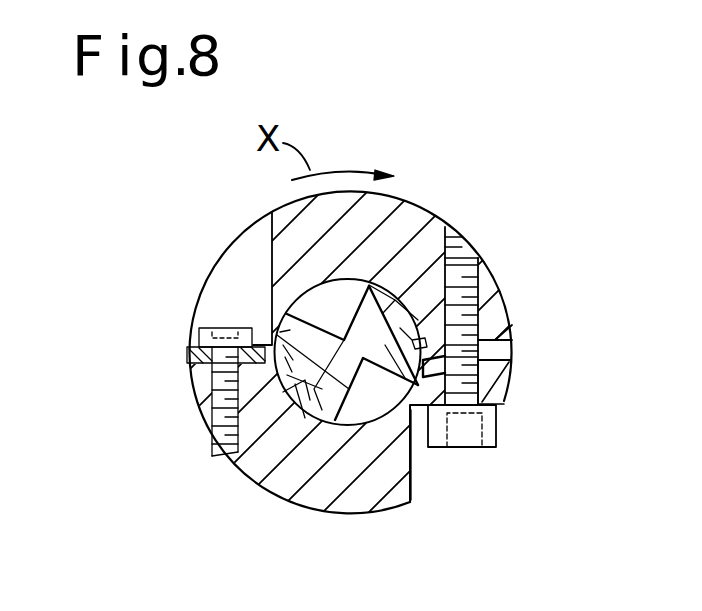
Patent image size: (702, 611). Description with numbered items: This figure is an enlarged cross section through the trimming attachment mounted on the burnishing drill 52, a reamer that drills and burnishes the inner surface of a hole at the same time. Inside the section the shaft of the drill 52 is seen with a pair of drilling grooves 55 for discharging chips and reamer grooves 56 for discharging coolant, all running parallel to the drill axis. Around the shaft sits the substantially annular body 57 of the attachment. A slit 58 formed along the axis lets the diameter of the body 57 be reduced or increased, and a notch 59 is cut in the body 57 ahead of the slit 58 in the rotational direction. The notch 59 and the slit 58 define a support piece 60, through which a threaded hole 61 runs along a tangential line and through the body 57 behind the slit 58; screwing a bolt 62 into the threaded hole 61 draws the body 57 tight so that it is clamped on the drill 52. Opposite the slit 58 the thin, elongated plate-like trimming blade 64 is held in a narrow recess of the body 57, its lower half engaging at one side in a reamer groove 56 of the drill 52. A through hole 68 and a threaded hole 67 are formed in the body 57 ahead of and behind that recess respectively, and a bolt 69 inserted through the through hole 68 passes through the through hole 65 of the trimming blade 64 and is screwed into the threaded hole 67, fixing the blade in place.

The burnishing drill 52 is at (310, 428).
The drilling grooves 55 is at (350, 304).
The reamer grooves 56 is at (445, 257).
The body 57 is at (417, 220).
The slit 58 is at (500, 358).
The notch 59 is at (413, 457).
The support piece 60 is at (508, 372).
The threaded hole 61 is at (470, 297).
The bolt 62 is at (467, 437).
The trimming blade 64 is at (186, 349).
The through hole 65 is at (205, 372).
The threaded hole 67 is at (233, 447).
The through hole 68 is at (242, 268).
The bolt 69 is at (227, 326).